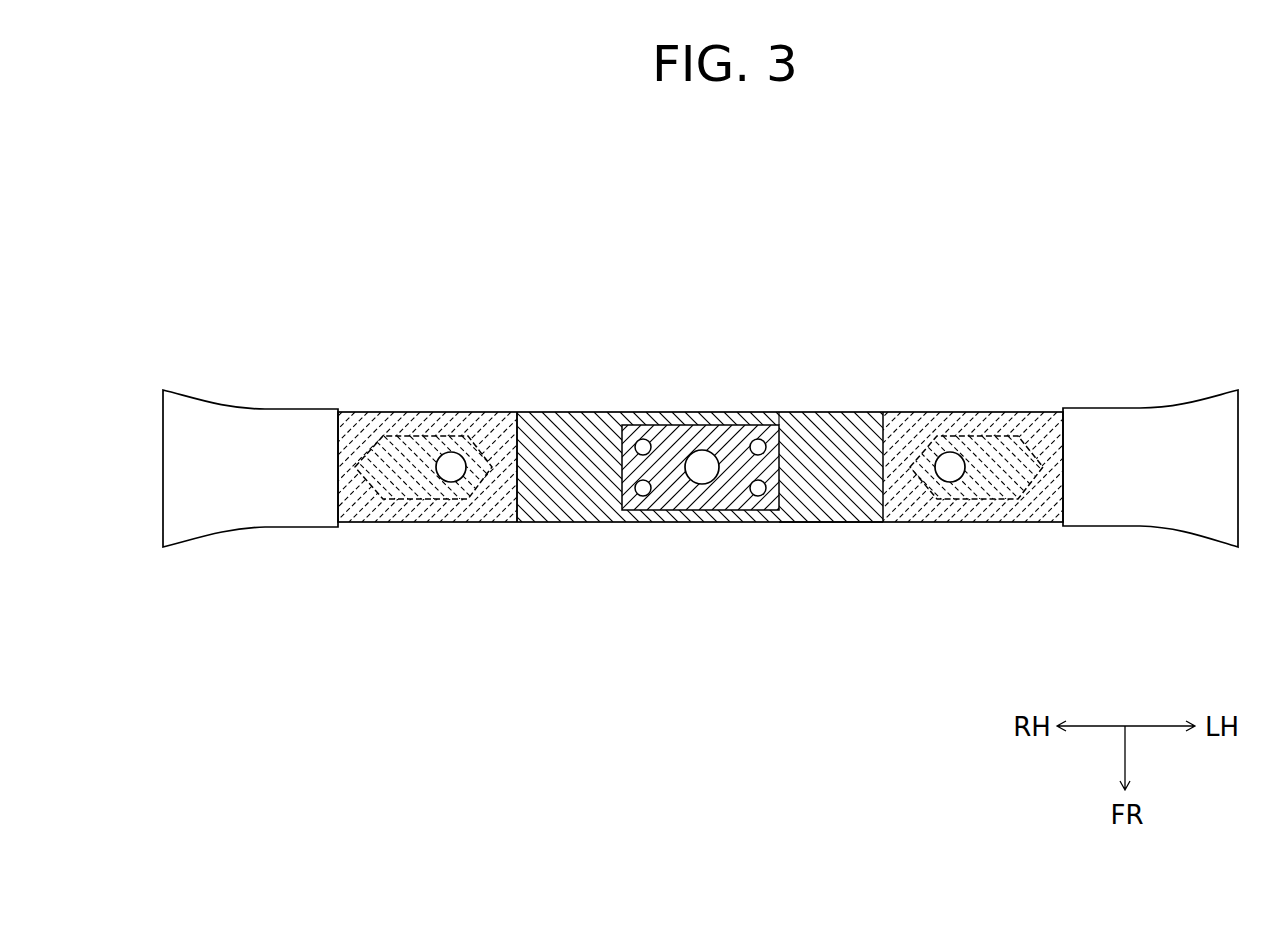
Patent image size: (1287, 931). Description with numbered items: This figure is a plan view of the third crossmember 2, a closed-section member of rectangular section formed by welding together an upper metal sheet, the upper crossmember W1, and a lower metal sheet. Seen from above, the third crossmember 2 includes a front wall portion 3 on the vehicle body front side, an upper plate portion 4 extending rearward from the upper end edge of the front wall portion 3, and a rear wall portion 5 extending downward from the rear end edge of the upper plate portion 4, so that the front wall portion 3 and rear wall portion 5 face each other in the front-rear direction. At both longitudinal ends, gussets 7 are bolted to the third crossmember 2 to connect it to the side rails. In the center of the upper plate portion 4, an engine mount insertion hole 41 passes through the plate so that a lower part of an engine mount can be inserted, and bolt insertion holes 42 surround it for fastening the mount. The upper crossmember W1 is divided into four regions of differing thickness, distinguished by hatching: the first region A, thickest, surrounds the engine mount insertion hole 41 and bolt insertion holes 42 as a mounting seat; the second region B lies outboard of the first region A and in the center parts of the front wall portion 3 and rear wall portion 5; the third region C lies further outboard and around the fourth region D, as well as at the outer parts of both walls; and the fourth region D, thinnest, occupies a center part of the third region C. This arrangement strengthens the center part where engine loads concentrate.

The third crossmember 2 is at (603, 402).
The front wall portion 3 is at (832, 532).
The upper plate portion 4 is at (558, 439).
The rear wall portion 5 is at (915, 402).
The gusset 7 is at (253, 425).
The engine mount insertion hole 41 is at (702, 452).
The bolt insertion hole 42 is at (643, 440).
The first region A is at (705, 497).
The second region B is at (563, 505).
The third region C is at (482, 505).
The fourth region D is at (405, 447).
The upper crossmember W1 is at (832, 430).